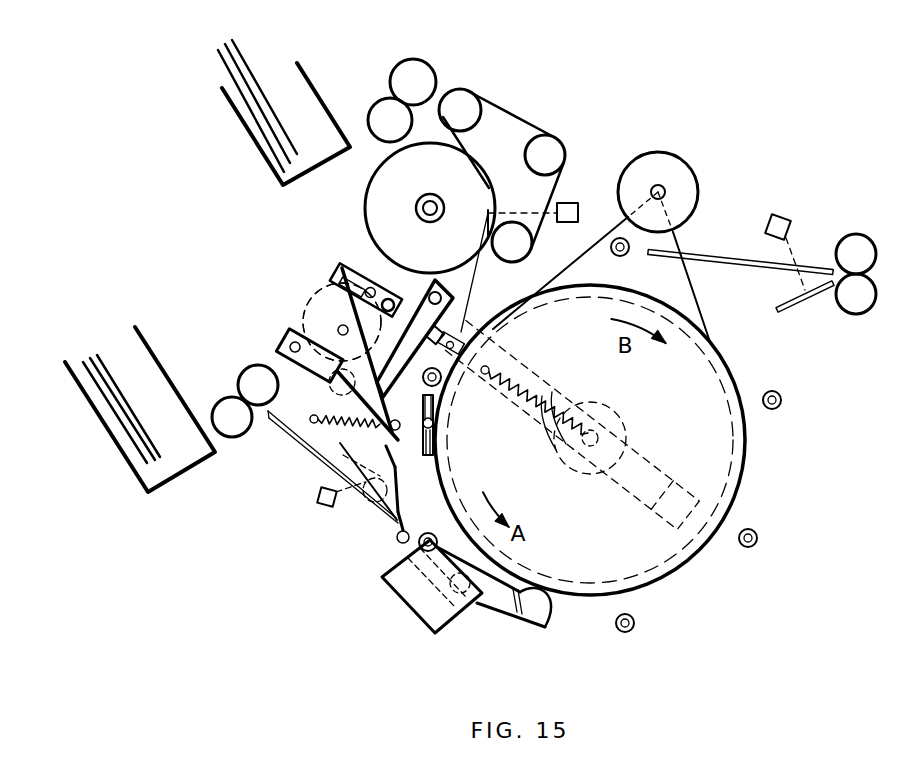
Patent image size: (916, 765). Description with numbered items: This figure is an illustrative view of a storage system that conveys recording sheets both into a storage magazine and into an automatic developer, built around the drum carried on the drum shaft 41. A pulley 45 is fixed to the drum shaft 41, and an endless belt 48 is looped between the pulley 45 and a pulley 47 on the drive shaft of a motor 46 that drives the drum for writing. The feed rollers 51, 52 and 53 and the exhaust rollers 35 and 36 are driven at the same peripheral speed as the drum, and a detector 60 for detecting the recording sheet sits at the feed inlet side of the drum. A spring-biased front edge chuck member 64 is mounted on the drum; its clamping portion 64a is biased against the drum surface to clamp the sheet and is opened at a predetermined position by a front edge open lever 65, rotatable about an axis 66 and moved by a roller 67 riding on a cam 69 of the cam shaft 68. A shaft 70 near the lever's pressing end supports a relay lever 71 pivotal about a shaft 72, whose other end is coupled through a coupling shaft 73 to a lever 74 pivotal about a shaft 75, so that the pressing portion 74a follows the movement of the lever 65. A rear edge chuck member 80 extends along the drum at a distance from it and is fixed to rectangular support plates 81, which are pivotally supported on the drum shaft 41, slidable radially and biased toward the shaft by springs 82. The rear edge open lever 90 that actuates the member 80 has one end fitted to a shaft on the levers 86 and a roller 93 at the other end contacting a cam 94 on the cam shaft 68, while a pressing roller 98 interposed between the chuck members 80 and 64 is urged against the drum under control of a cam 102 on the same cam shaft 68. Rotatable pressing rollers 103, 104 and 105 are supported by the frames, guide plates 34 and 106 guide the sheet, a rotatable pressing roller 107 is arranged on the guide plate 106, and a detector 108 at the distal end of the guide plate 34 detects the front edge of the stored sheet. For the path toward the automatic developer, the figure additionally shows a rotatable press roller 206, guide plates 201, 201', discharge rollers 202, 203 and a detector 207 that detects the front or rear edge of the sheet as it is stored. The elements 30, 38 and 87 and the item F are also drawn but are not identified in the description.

The paper feed tray 30 is at (312, 74).
The sheets F is at (248, 70).
The feed roller 51 is at (437, 66).
The feed roller 52 is at (368, 117).
The feed roller 53 is at (365, 205).
The detector 60 is at (567, 203).
The axis 66 is at (462, 332).
The motor 46 is at (664, 162).
The pulley 47 is at (667, 190).
The endless belt 48 is at (702, 300).
The rotatable press roller 206 is at (628, 252).
The guide plate 201 is at (740, 236).
The guide plate 201' is at (805, 322).
The detector 207 is at (780, 217).
The discharge roller 203 is at (857, 244).
The discharge roller 202 is at (863, 304).
The pulley 45 is at (741, 478).
The drum shaft 41 is at (600, 425).
The rectangular support plate 81 is at (555, 395).
The pressing roller 98 is at (494, 372).
The spring 82 is at (536, 427).
The rear edge chuck member 80 is at (480, 338).
The rotatable pressing roller 103 is at (785, 425).
The rotatable pressing roller 104 is at (748, 548).
The rotatable pressing roller 105 is at (636, 623).
The front edge open lever 65 is at (415, 377).
The plate 87 is at (378, 270).
The lever 86 is at (337, 280).
The cam shaft 68 is at (343, 325).
The cam 69 is at (310, 327).
The cam 94 is at (342, 382).
The cam 102 is at (342, 322).
The roller 93 is at (282, 340).
The paper tray 38 is at (153, 352).
The exhaust roller 35 is at (245, 368).
The exhaust roller 36 is at (216, 405).
The roller 67 is at (305, 410).
The rear edge open lever 90 is at (278, 431).
The shaft 70 is at (398, 438).
The guide plate 34 is at (297, 452).
The relay lever 71 is at (387, 522).
The shaft 72 is at (382, 480).
The detector 108 is at (317, 498).
The coupling shaft 73 is at (398, 540).
The guide plate 106 is at (415, 617).
The rotatable pressing roller 107 is at (400, 580).
The shaft 75 is at (460, 595).
The lever 74 is at (498, 605).
The pressing portion 74a is at (557, 602).
The front edge chuck member 64 is at (436, 448).
The clamping portion 64a is at (436, 412).